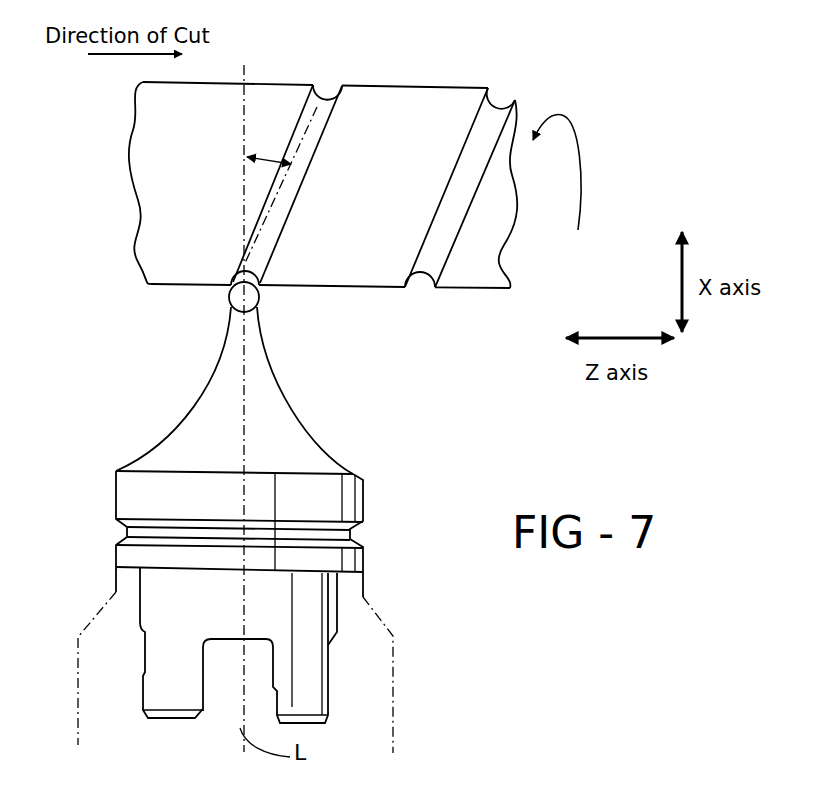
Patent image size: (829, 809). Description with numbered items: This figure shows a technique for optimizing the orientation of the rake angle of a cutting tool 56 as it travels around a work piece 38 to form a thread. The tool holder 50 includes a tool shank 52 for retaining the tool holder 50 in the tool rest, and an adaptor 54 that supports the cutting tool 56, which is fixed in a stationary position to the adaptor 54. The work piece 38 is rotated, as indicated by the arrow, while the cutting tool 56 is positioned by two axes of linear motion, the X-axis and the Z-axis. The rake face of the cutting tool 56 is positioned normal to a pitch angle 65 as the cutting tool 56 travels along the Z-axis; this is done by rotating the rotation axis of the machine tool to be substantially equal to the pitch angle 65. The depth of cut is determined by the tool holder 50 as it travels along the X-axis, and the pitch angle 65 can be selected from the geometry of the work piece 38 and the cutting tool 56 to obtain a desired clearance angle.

The work piece 38 is at (425, 90).
The pitch angle 65 is at (266, 152).
The cutting tool 56 is at (233, 295).
The adaptor 54 is at (299, 437).
The tool holder 50 is at (69, 594).
The tool shank 52 is at (313, 683).